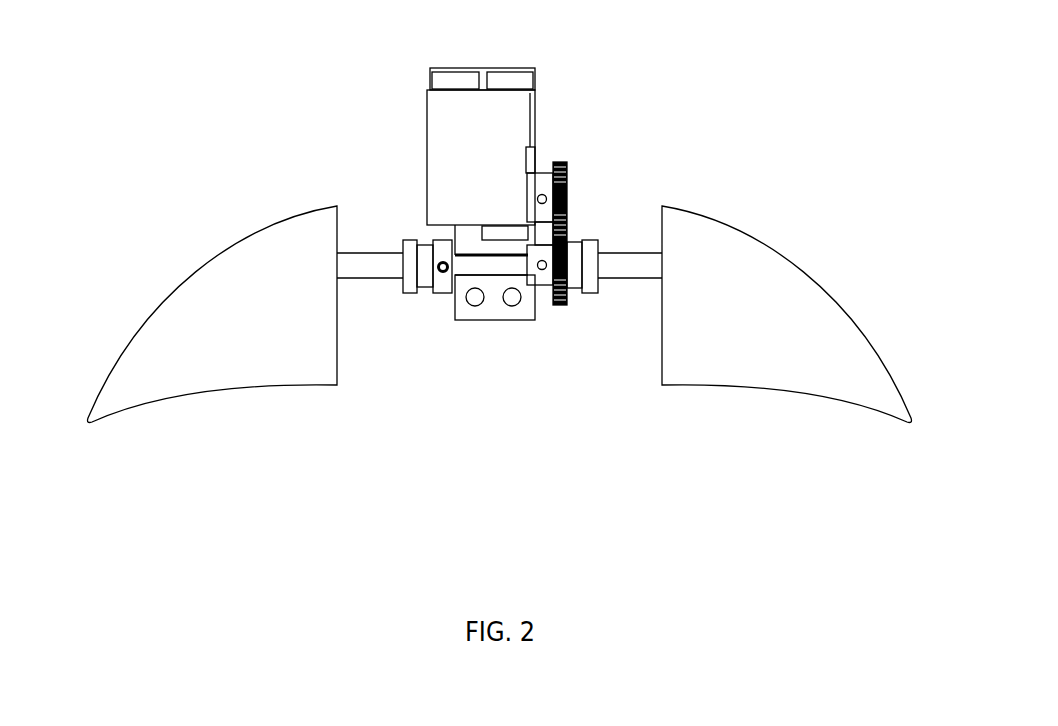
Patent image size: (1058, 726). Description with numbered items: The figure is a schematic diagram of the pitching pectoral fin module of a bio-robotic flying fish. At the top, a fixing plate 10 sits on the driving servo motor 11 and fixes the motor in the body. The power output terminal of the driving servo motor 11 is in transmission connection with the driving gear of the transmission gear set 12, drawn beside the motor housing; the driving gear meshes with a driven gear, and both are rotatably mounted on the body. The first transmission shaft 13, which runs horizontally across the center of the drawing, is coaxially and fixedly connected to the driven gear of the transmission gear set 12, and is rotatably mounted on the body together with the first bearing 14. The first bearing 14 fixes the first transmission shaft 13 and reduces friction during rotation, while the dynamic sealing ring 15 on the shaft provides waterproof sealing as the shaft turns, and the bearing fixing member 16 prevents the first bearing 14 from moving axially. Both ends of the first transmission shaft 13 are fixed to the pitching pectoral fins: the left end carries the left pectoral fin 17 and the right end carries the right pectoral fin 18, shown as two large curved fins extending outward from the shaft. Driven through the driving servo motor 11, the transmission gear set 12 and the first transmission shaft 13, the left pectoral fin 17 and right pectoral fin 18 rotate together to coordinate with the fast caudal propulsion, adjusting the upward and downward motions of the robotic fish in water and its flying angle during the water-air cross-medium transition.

The fixing plate 10 is at (512, 79).
The driving servo motor 11 is at (457, 119).
The transmission gear set 12 is at (535, 185).
The first transmission shaft 13 is at (623, 278).
The first bearing 14 is at (572, 275).
The dynamic sealing ring 15 is at (408, 293).
The bearing fixing member 16 is at (439, 293).
The left pectoral fin 17 is at (190, 362).
The right pectoral fin 18 is at (802, 360).